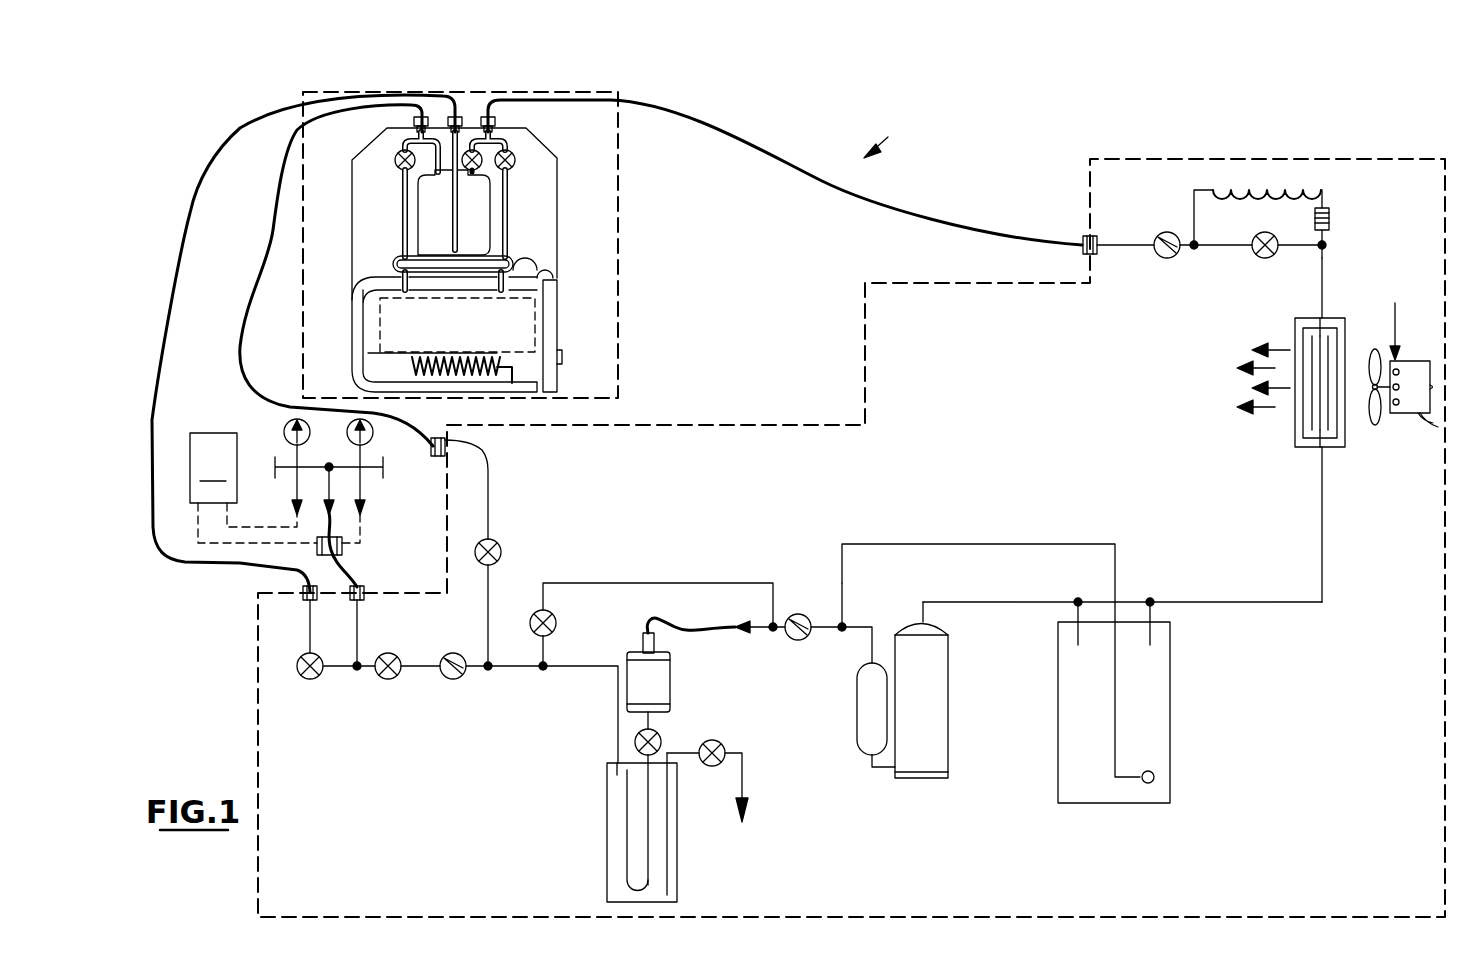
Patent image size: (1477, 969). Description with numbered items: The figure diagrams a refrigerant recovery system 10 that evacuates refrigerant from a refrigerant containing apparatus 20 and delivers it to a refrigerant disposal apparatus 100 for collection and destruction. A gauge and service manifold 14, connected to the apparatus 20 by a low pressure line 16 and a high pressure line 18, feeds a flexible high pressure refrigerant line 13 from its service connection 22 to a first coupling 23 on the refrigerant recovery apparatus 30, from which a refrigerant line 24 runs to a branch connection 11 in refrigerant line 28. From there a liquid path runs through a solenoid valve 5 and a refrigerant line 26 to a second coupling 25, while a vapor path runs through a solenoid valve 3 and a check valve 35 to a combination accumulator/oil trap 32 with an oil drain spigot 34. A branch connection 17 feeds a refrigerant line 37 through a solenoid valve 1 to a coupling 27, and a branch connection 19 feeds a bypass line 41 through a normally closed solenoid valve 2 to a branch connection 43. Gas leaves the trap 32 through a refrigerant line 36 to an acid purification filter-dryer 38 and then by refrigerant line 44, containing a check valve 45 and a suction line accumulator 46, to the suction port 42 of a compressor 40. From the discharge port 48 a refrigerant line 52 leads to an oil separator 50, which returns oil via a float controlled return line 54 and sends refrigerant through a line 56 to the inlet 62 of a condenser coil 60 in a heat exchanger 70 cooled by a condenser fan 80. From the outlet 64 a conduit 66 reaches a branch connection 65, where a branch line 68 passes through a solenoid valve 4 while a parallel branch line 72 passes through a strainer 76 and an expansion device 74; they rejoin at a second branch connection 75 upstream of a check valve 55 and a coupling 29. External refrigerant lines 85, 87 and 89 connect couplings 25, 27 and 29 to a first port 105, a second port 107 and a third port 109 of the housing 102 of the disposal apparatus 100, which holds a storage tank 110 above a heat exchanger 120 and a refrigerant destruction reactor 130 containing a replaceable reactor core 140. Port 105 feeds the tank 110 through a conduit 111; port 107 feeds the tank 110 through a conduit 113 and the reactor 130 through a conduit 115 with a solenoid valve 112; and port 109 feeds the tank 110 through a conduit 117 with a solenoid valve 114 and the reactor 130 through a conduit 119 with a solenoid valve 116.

The solenoid valve 1 is at (495, 545).
The solenoid valve 2 is at (553, 617).
The solenoid valve 3 is at (390, 652).
The solenoid valve 4 is at (1256, 238).
The solenoid valve 5 is at (315, 680).
The refrigerant recovery system 10 is at (892, 138).
The branch connection 11 is at (358, 668).
The flexible high pressure refrigerant line 13 is at (343, 543).
The gauge and service manifold 14 is at (310, 467).
The line 16 is at (197, 530).
The branch connection 17 is at (489, 668).
The line 18 is at (240, 527).
The branch connection 19 is at (546, 663).
The refrigerant containing apparatus 20 is at (213, 468).
The service connection 22 is at (331, 490).
The first coupling 23 is at (366, 592).
The refrigerant line 24 is at (355, 652).
The second coupling 25 is at (302, 592).
The refrigerant line 26 is at (308, 638).
The coupling 27 is at (447, 440).
The refrigerant line 28 is at (420, 670).
The coupling 29 is at (1088, 235).
The refrigerant recovery apparatus 30 is at (258, 726).
The combination accumulator/oil trap 32 is at (607, 830).
The oil drain spigot 34 is at (743, 790).
The check valve 35 is at (462, 678).
The refrigerant line 36 is at (660, 745).
The refrigerant line 37 is at (490, 490).
The acid purification filter-dryer 38 is at (671, 680).
The compressor 40 is at (948, 705).
The bypass line 41 is at (660, 583).
The suction port 42 is at (878, 770).
The branch connection 43 is at (772, 625).
The refrigerant line 44 is at (862, 632).
The check valve 45 is at (810, 620).
The suction line accumulator 46 is at (857, 715).
The compressor discharge port 48 is at (923, 605).
The oil separator 50 is at (1172, 720).
The refrigerant line 52 is at (1025, 603).
The float controlled return line 54 is at (1015, 543).
The check valve 55 is at (1160, 256).
The line 56 is at (1322, 570).
The condenser coil 60 is at (1300, 340).
The inlet 62 is at (1318, 447).
The outlet 64 is at (1318, 318).
The branch connection 65 is at (1325, 245).
The conduit 66 is at (1325, 285).
The branch line 68 is at (1303, 248).
The heat exchanger 70 is at (1337, 318).
The branch line 72 is at (1323, 192).
The refrigerant expansion device 74 is at (1270, 188).
The second branch connection 75 is at (1196, 250).
The strainer 76 is at (1330, 218).
The condenser fan 80 is at (1402, 415).
The external refrigerant line 85 is at (163, 380).
The external refrigerant line 87 is at (275, 228).
The external refrigerant line 89 is at (823, 180).
The refrigerant disposal apparatus 100 is at (620, 255).
The housing 102 is at (558, 160).
The first port 105 is at (453, 117).
The second port 107 is at (420, 117).
The third port 109 is at (495, 125).
The storage tank 110 is at (509, 205).
The conduit 111 is at (536, 262).
The solenoid valve 112 is at (396, 155).
The conduit 113 is at (402, 176).
The solenoid valve 114 is at (482, 153).
The conduit 115 is at (401, 222).
The solenoid valve 116 is at (513, 165).
The conduit 117 is at (474, 140).
The conduit 119 is at (459, 235).
The heat exchanger 120 is at (393, 264).
The refrigerant destruction reactor 130 is at (360, 380).
The replaceable reactor core 140 is at (525, 322).